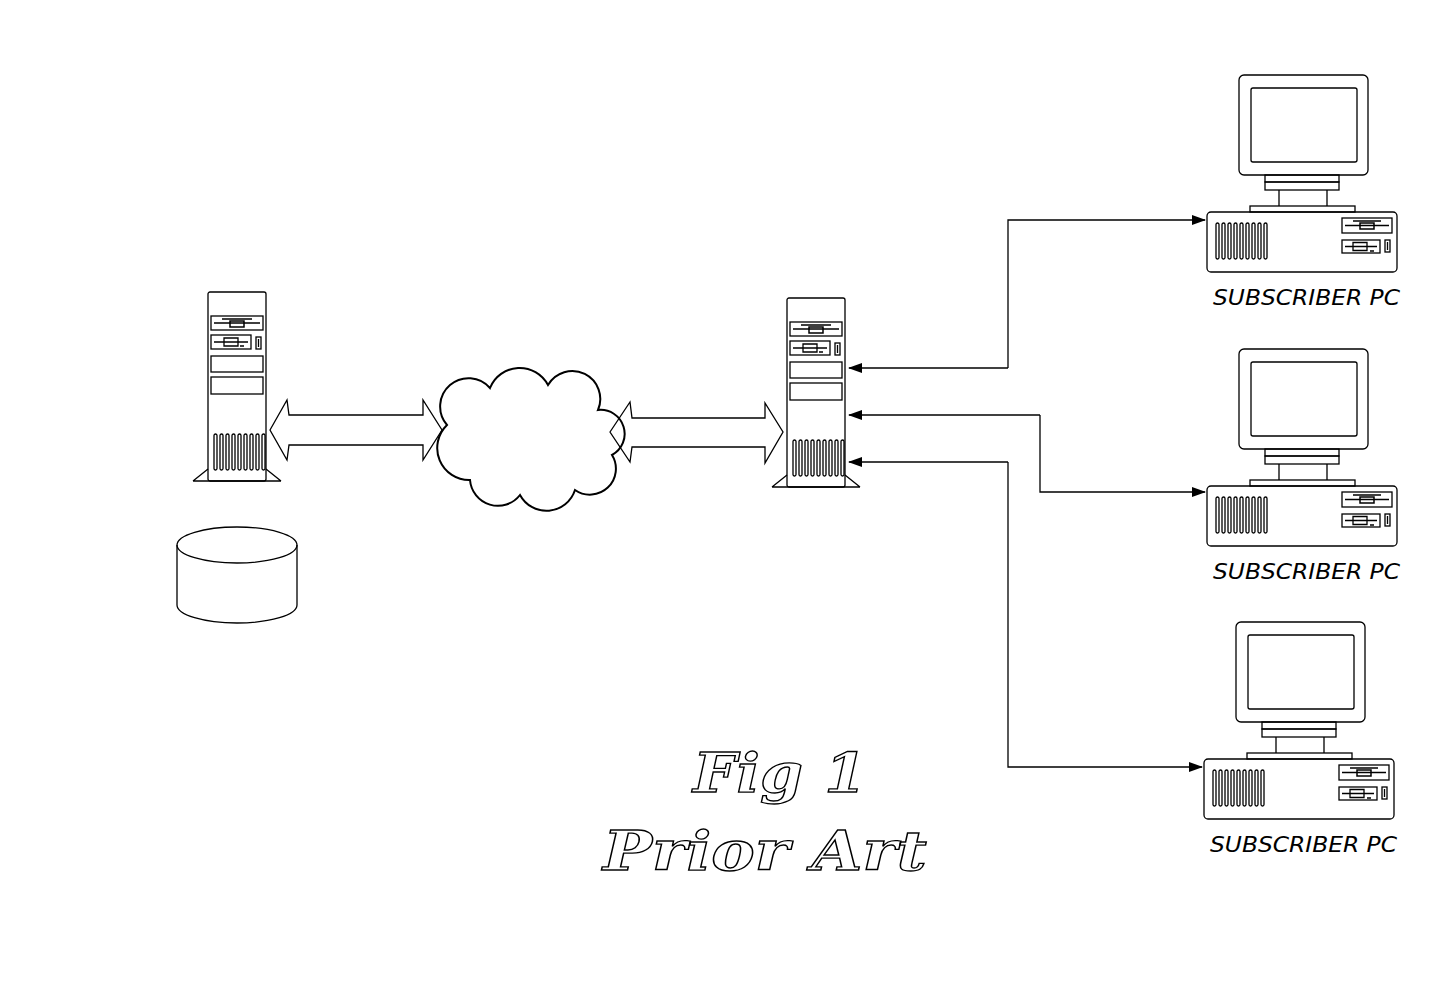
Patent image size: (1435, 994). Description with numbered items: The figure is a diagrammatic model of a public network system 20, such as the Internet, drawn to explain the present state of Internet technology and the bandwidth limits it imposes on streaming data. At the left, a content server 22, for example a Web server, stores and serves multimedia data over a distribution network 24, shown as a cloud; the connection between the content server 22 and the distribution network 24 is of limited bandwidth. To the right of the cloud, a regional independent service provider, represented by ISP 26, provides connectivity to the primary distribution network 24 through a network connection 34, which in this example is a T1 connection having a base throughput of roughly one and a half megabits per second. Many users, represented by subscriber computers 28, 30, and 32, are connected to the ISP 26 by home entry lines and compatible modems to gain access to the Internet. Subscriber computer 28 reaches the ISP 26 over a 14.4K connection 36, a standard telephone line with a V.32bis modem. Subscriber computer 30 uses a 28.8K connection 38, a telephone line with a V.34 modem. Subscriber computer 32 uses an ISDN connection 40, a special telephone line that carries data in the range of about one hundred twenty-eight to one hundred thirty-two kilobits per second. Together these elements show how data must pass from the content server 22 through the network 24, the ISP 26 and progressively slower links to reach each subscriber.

The public network system 20 is at (740, 178).
The content server 22 is at (168, 388).
The distribution network 24 is at (555, 383).
The ISP 26 is at (828, 298).
The subscriber computer 28 is at (1377, 212).
The subscriber computer 30 is at (1377, 486).
The subscriber computer 32 is at (1374, 759).
The network connection 34 is at (667, 428).
The 14.4K connection 36 is at (1020, 215).
The 28.8K connection 38 is at (1063, 496).
The ISDN connection 40 is at (1027, 765).